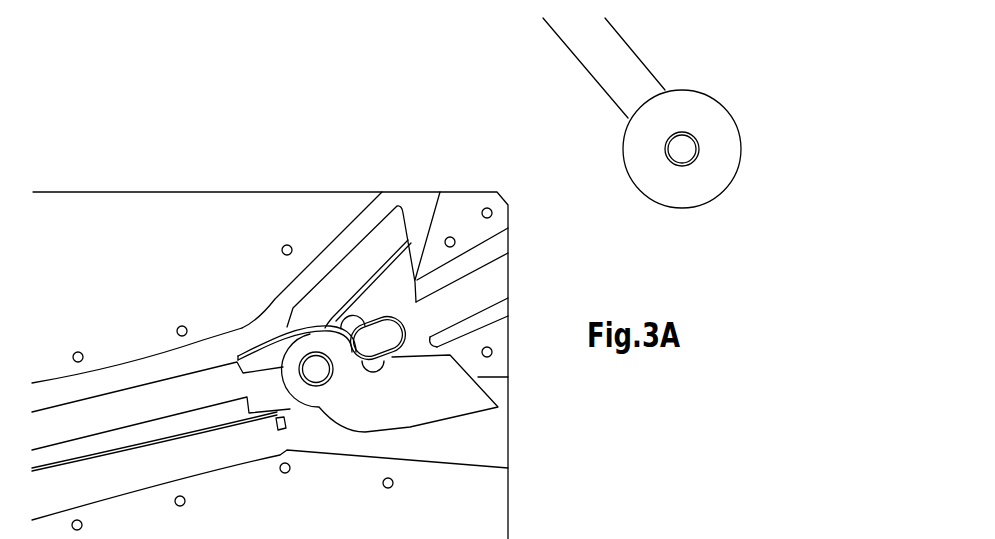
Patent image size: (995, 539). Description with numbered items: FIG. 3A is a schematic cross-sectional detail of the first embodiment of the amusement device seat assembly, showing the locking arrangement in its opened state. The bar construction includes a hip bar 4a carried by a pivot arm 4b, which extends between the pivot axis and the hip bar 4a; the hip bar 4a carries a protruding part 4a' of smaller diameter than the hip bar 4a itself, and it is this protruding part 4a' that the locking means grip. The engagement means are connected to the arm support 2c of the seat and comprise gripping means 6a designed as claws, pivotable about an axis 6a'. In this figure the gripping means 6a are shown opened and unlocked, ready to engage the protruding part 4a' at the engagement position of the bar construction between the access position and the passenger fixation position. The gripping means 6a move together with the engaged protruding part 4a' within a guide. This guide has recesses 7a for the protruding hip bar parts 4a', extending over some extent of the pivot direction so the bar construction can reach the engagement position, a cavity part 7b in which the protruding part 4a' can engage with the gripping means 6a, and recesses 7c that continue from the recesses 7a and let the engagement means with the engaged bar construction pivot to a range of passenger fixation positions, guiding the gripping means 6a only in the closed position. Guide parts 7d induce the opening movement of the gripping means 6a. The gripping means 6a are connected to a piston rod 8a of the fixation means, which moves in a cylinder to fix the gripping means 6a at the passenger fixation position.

The arm support 2c is at (270, 365).
The gripping means 6a is at (368, 312).
The axis 6a' is at (269, 318).
The recesses 7a is at (462, 287).
The cavity part 7b is at (376, 342).
The recesses 7c is at (159, 450).
The guide parts 7d is at (442, 236).
The piston rod 8a is at (161, 406).
The hip bar 4a is at (713, 149).
The protruding part 4a' is at (741, 164).
The pivot arm 4b is at (624, 68).